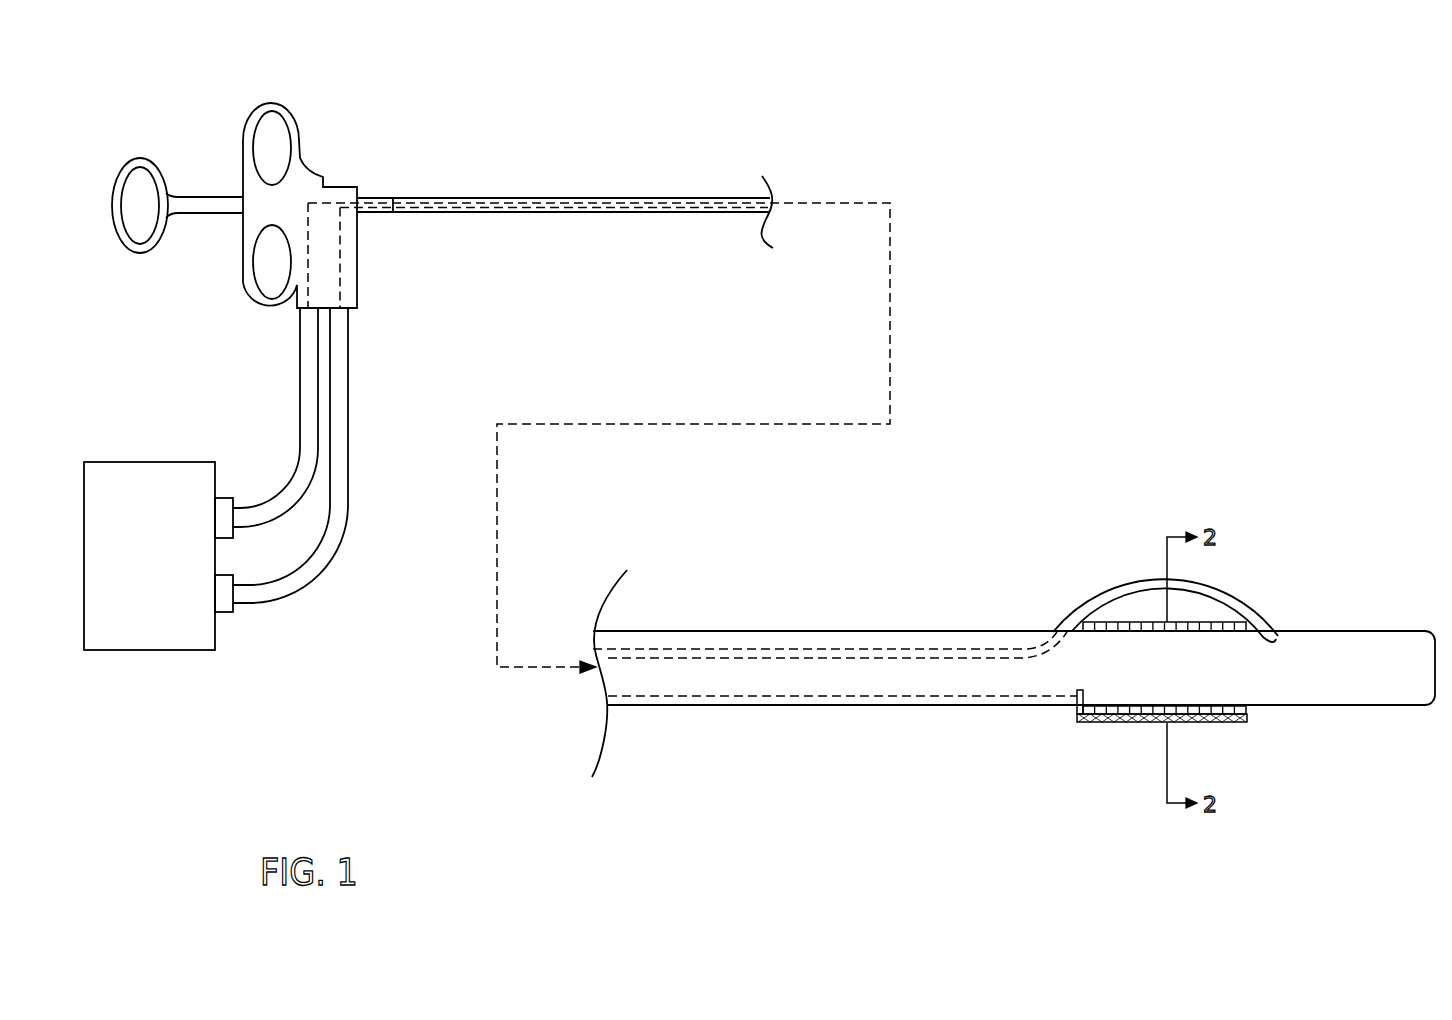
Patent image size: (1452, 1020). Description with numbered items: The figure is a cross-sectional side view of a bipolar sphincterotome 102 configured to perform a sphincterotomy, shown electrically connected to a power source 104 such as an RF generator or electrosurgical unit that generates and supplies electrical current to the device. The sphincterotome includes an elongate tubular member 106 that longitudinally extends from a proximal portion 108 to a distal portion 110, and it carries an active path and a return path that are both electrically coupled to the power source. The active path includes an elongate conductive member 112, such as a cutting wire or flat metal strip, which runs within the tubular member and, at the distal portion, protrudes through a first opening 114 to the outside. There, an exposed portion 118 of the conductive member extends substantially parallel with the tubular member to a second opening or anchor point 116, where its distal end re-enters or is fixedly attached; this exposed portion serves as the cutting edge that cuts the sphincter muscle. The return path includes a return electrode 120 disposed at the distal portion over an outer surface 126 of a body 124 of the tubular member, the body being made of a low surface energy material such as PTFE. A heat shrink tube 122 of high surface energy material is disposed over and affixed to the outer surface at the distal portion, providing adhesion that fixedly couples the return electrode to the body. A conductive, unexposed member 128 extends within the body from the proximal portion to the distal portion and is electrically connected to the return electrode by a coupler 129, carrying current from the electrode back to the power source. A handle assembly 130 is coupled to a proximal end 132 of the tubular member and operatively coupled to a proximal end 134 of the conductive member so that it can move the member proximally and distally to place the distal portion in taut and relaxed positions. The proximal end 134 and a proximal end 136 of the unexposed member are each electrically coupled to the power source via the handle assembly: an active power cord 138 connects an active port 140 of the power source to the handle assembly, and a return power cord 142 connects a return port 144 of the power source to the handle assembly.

The bipolar sphincterotome 102 is at (1256, 133).
The power source 104 is at (146, 462).
The elongate tubular member 106 is at (655, 198).
The proximal portion 108 is at (768, 275).
The distal portion 110 is at (1435, 818).
The elongate conductive member 112 is at (710, 203).
The first opening 114 is at (1057, 628).
The second opening or anchor point 116 is at (1272, 628).
The exposed portion 118 is at (1245, 605).
The return electrode 120 is at (1117, 722).
The heat shrink tube 122 is at (1123, 625).
The body 124 is at (693, 683).
The outer surface 126 is at (950, 706).
The unexposed member 128 is at (597, 212).
The coupler 129 is at (1072, 704).
The handle assembly 130 is at (393, 102).
The proximal end 132 is at (393, 198).
The proximal end 134 is at (332, 203).
The proximal end 136 is at (363, 212).
The active power cord 138 is at (310, 378).
The active port 140 is at (225, 505).
The return power cord 142 is at (343, 405).
The return port 144 is at (223, 612).